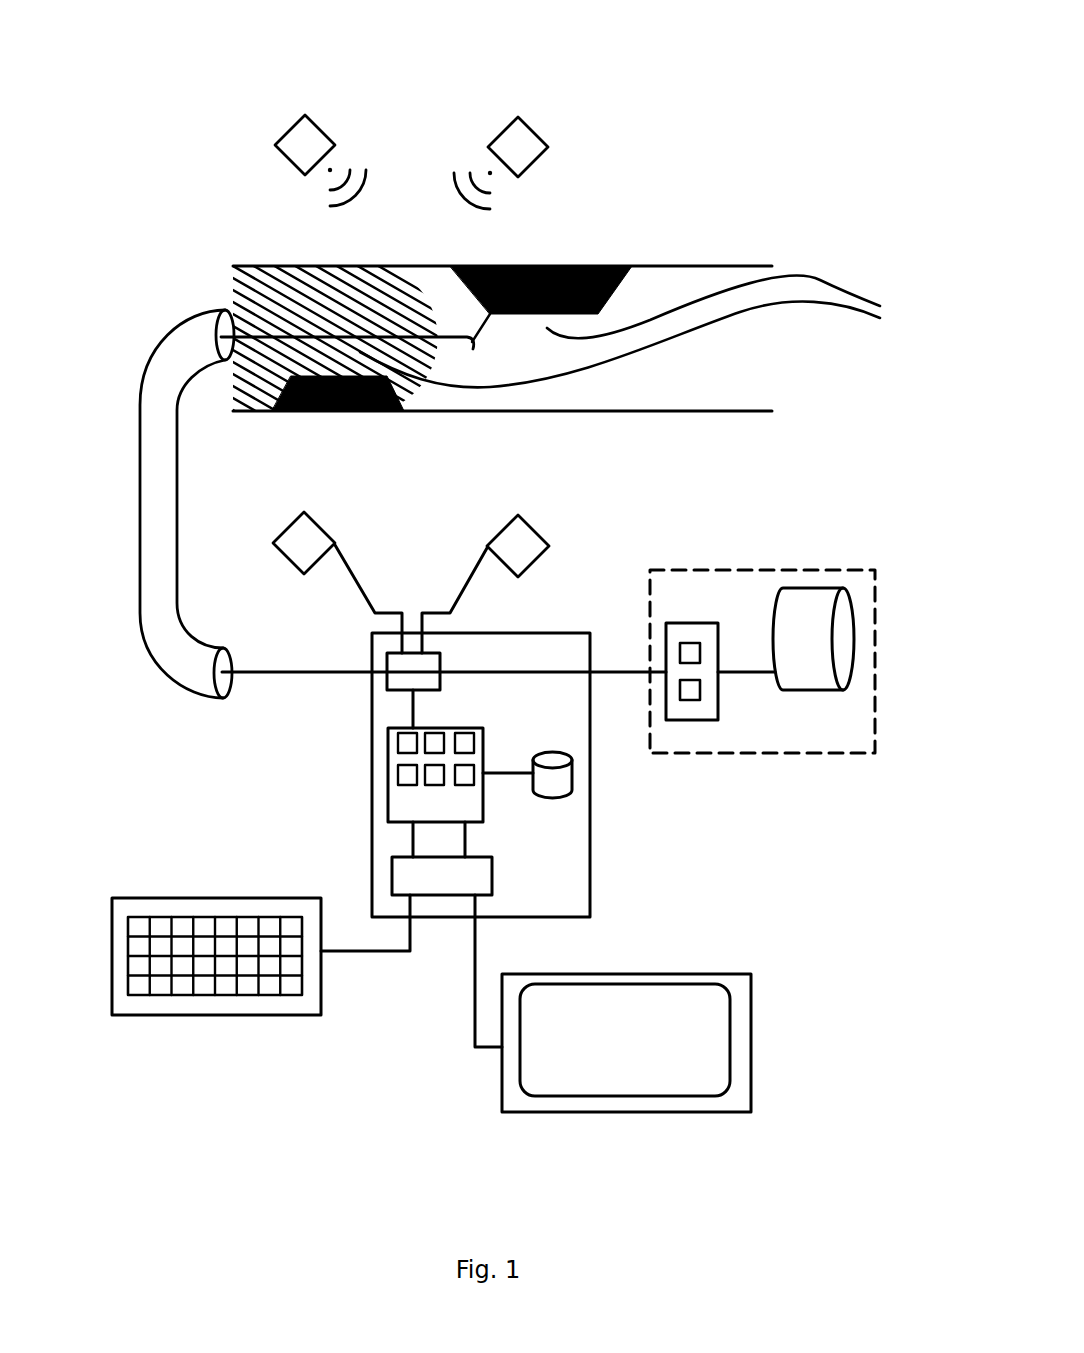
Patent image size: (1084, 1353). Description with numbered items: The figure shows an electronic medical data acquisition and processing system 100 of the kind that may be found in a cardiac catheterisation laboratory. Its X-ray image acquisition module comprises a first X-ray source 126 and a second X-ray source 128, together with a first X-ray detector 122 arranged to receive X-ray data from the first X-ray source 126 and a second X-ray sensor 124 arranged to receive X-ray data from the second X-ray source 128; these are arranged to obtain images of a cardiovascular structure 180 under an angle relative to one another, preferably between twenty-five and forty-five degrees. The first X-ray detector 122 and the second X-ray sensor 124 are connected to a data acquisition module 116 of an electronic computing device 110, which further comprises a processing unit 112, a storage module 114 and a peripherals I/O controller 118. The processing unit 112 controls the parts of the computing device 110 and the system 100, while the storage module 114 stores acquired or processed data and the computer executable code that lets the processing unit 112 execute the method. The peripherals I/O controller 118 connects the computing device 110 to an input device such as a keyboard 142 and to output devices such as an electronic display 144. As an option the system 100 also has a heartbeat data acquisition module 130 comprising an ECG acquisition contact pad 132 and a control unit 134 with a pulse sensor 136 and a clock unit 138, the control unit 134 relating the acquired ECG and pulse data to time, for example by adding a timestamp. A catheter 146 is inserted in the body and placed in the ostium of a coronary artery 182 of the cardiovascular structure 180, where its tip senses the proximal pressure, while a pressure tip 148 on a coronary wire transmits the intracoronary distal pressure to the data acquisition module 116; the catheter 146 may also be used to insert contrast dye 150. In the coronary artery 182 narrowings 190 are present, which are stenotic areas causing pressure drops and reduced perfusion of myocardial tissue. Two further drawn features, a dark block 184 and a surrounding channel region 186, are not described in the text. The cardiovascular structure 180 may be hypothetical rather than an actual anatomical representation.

The electronic medical data acquisition and processing system 100 is at (282, 1063).
The electronic computing device 110 is at (590, 860).
The processing unit 112 is at (392, 735).
The storage module 114 is at (572, 785).
The data acquisition module 116 is at (387, 653).
The peripherals I/O controller 118 is at (402, 858).
The first X-ray detector 122 is at (273, 540).
The second X-ray sensor 124 is at (517, 515).
The first X-ray source 126 is at (305, 115).
The second X-ray source 128 is at (533, 120).
The heartbeat data acquisition module 130 is at (875, 660).
The ECG acquisition contact pad 132 is at (855, 610).
The control unit 134 is at (680, 623).
The pulse sensor 136 is at (700, 660).
The clock unit 138 is at (700, 700).
The keyboard 142 is at (235, 897).
The electronic display 144 is at (751, 1013).
The catheter 146 is at (140, 392).
The pressure tip 148 is at (530, 266).
The contrast dye 150 is at (257, 308).
The cardiovascular structure 180 is at (427, 155).
The coronary artery 182 is at (262, 265).
The support block 184 is at (608, 200).
The channel 186 is at (765, 163).
The narrowings 190 is at (642, 332).